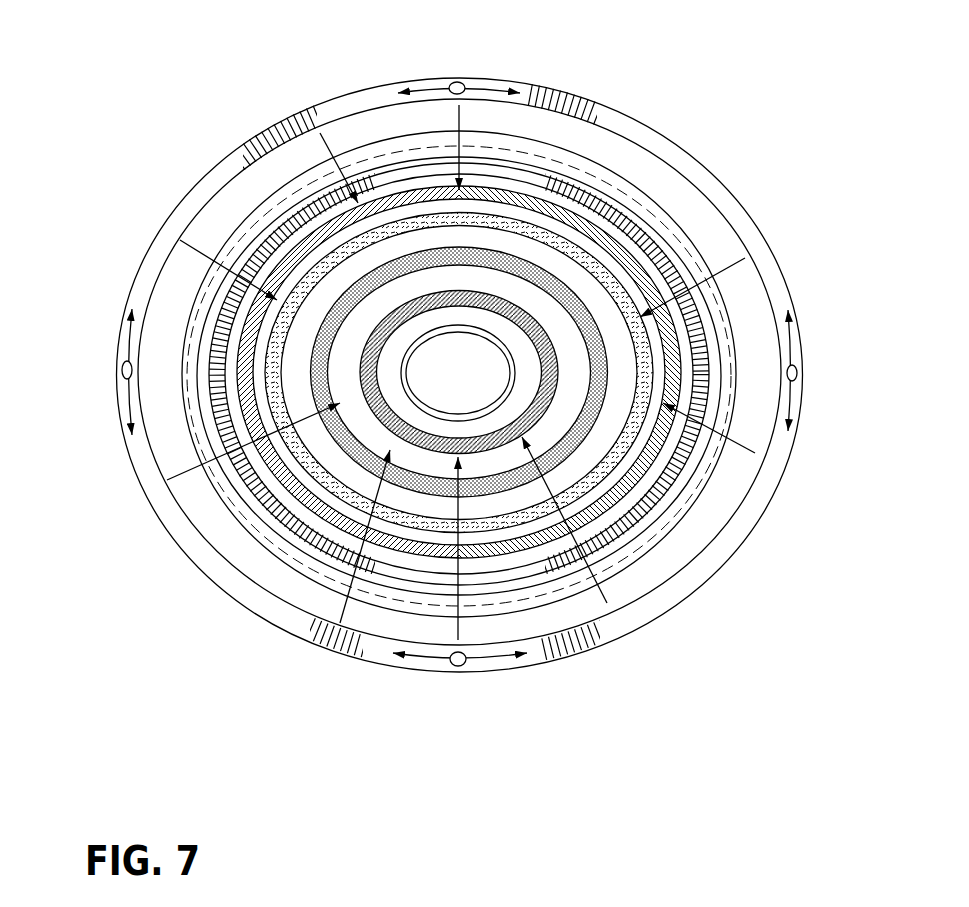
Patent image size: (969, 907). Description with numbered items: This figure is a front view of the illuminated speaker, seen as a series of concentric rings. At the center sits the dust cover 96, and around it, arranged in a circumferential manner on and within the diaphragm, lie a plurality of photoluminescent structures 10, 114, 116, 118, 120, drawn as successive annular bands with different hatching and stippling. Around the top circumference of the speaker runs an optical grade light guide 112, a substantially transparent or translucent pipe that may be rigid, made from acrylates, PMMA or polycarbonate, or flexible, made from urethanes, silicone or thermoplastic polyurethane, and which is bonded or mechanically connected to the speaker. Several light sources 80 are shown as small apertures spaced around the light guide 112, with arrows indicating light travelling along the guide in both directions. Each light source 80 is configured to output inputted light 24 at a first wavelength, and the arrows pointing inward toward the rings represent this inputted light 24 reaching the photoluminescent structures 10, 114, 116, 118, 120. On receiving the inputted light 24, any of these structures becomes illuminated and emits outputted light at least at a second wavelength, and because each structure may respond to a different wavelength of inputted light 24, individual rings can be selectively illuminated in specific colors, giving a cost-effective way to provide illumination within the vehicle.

The photoluminescent structure 10 is at (642, 228).
The inputted light 24 is at (482, 87).
The light source 80 is at (456, 81).
The dust cover 96 is at (440, 348).
The light guide 112 is at (750, 522).
The photoluminescent structure 114 is at (675, 347).
The photoluminescent structure 116 is at (608, 477).
The photoluminescent structure 118 is at (412, 492).
The photoluminescent structure 120 is at (373, 412).